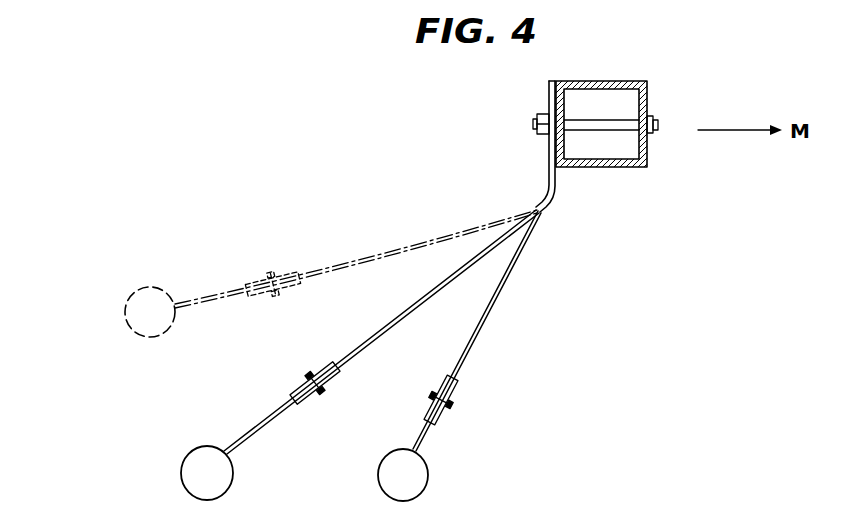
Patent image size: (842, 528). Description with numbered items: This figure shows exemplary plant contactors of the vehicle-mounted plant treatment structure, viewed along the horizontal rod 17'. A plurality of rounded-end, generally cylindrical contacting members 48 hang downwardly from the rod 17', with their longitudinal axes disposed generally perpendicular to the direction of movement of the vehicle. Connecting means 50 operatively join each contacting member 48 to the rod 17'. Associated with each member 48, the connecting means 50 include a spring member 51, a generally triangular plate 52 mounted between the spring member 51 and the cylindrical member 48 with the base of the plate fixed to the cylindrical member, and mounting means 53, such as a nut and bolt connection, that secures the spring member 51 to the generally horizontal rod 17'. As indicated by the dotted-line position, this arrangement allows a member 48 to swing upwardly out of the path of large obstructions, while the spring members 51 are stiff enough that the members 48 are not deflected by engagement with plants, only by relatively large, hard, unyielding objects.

The rod 17' is at (600, 119).
The contacting member 48 is at (224, 466).
The connecting means 50 is at (508, 186).
The spring member 51 is at (511, 270).
The triangular plate 52 is at (299, 392).
The mounting means 53 is at (541, 112).